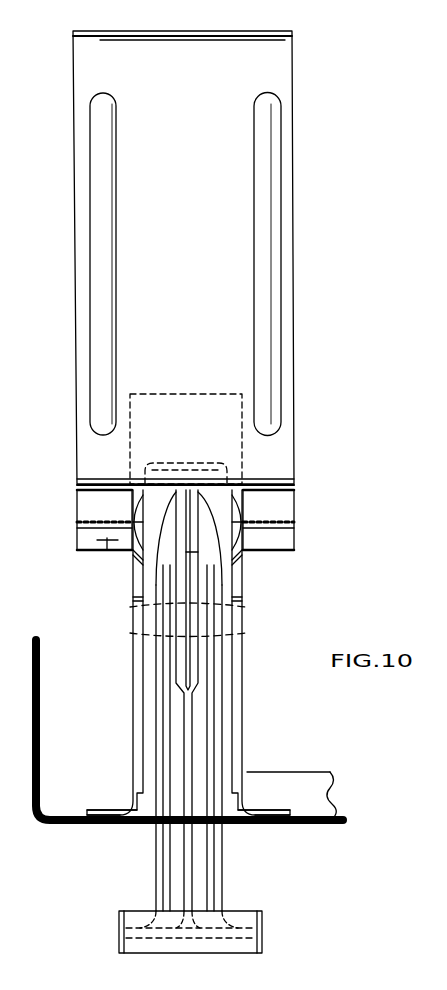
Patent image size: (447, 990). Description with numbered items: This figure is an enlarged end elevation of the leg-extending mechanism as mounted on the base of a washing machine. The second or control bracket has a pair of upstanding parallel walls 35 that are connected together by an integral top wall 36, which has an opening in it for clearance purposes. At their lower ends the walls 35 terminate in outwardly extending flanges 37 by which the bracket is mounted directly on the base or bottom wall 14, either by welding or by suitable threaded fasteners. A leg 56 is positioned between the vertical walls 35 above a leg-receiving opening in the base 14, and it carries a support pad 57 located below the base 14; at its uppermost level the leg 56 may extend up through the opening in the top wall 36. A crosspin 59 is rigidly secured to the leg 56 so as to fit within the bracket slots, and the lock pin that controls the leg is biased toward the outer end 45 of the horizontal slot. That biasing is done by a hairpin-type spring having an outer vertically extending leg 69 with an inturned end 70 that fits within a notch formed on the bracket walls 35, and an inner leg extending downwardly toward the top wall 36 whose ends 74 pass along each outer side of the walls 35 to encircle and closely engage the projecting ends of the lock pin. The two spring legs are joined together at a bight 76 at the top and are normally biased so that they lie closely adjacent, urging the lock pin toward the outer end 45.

The base or bottom wall 14 is at (332, 824).
The upstanding parallel walls 35 is at (153, 720).
The top wall 36 is at (178, 459).
The outwardly extending flanges 37 is at (98, 812).
The outer end 45 is at (107, 553).
The leg 56 is at (207, 865).
The support pad 57 is at (247, 945).
The crosspin 59 is at (133, 617).
The outer vertically extending leg 69 is at (223, 335).
The inturned end 70 is at (82, 497).
The ends 74 is at (90, 530).
The bight 76 is at (263, 33).